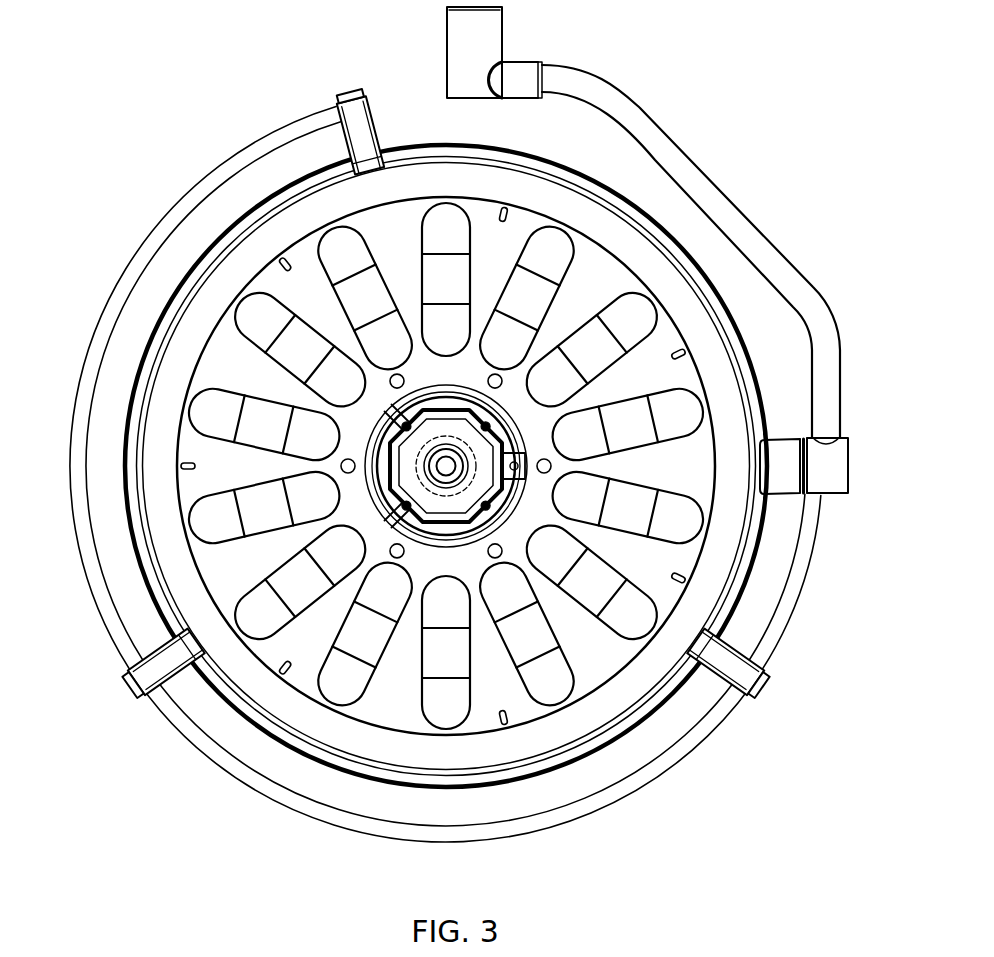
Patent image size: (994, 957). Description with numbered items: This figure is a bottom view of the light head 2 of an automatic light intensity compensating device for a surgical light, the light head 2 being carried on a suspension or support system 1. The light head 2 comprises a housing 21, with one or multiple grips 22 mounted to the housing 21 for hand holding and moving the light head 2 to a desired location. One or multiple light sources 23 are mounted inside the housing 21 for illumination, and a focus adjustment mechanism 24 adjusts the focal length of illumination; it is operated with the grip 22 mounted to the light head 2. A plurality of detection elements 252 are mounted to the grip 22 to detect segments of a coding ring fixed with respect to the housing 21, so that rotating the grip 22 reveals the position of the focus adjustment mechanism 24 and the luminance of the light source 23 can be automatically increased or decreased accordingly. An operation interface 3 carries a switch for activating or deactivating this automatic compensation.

The suspension or support system 1 is at (637, 75).
The light head 2 is at (785, 537).
The operation interface 3 is at (858, 430).
The housing 21 is at (712, 586).
The grip 22 is at (452, 472).
The light source 23 is at (453, 702).
The focus adjustment mechanism 24 is at (430, 462).
The detection element 252 is at (287, 255).